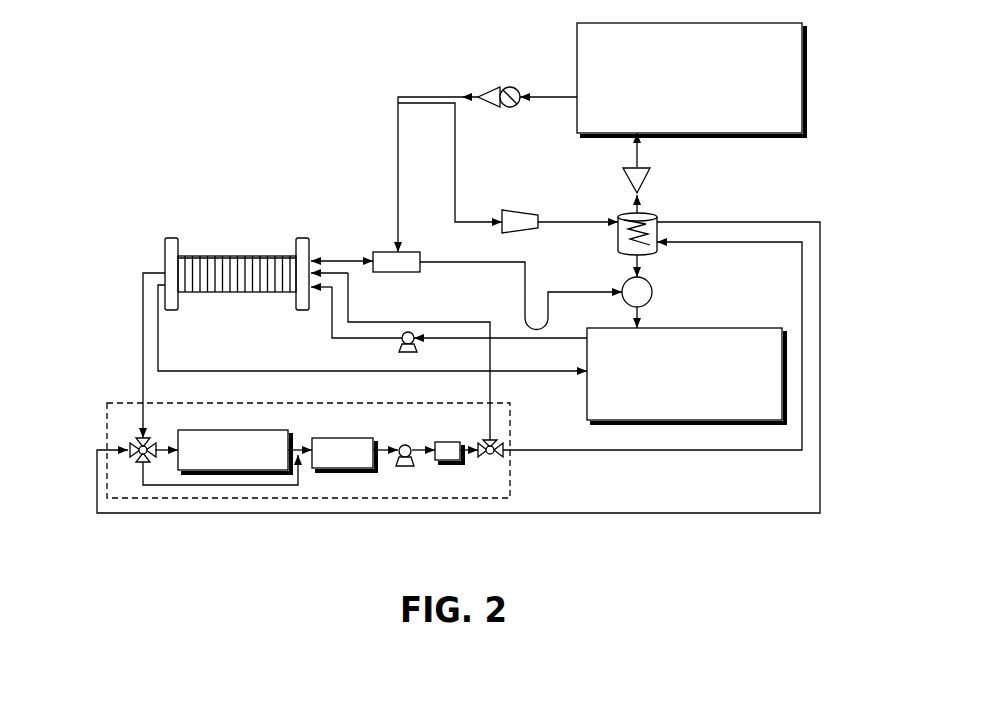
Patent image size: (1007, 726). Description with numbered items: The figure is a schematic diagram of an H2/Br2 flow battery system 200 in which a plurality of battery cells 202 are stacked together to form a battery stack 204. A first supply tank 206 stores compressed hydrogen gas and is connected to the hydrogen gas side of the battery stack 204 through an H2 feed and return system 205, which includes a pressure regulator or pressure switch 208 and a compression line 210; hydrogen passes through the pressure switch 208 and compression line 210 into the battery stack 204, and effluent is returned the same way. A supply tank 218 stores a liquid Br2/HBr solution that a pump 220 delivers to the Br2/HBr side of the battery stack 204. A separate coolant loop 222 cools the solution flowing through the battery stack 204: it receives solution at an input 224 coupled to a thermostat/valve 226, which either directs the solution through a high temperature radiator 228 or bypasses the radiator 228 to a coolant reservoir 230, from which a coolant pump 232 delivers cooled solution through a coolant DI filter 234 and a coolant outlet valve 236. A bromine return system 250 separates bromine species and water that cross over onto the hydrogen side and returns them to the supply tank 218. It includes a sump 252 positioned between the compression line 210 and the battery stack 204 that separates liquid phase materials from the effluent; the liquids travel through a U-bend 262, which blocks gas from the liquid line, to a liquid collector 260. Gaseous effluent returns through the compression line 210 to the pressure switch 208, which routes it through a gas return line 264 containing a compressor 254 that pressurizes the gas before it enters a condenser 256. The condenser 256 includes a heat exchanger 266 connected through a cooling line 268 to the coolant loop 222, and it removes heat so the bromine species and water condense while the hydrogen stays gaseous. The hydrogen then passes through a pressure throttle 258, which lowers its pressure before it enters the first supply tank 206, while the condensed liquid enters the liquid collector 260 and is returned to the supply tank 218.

The H2/Br2 flow battery system 200 is at (195, 52).
The battery cells 202 is at (197, 255).
The battery stack 204 is at (232, 225).
The H2 feed and return system 205 is at (366, 60).
The first supply tank 206 is at (577, 33).
The pressure regulator or pressure switch 208 is at (487, 88).
The compression line 210 is at (398, 105).
The supply tank 218 is at (750, 328).
The pump 220 is at (402, 345).
The coolant loop 222 is at (107, 413).
The input 224 is at (140, 430).
The thermostat/valve 226 is at (128, 445).
The high temperature radiator 228 is at (240, 430).
The coolant reservoir 230 is at (335, 438).
The coolant pump 232 is at (405, 443).
The coolant DI filter 234 is at (447, 462).
The coolant outlet valve 236 is at (498, 455).
The bromine return system 250 is at (750, 170).
The sump 252 is at (373, 253).
The compressor 254 is at (515, 210).
The condenser 256 is at (655, 213).
The pressure throttle 258 is at (623, 172).
The liquid collector 260 is at (655, 290).
The U-bend 262 is at (517, 305).
The gas return line 264 is at (455, 157).
The heat exchanger 266 is at (620, 247).
The cooling line 268 is at (822, 240).